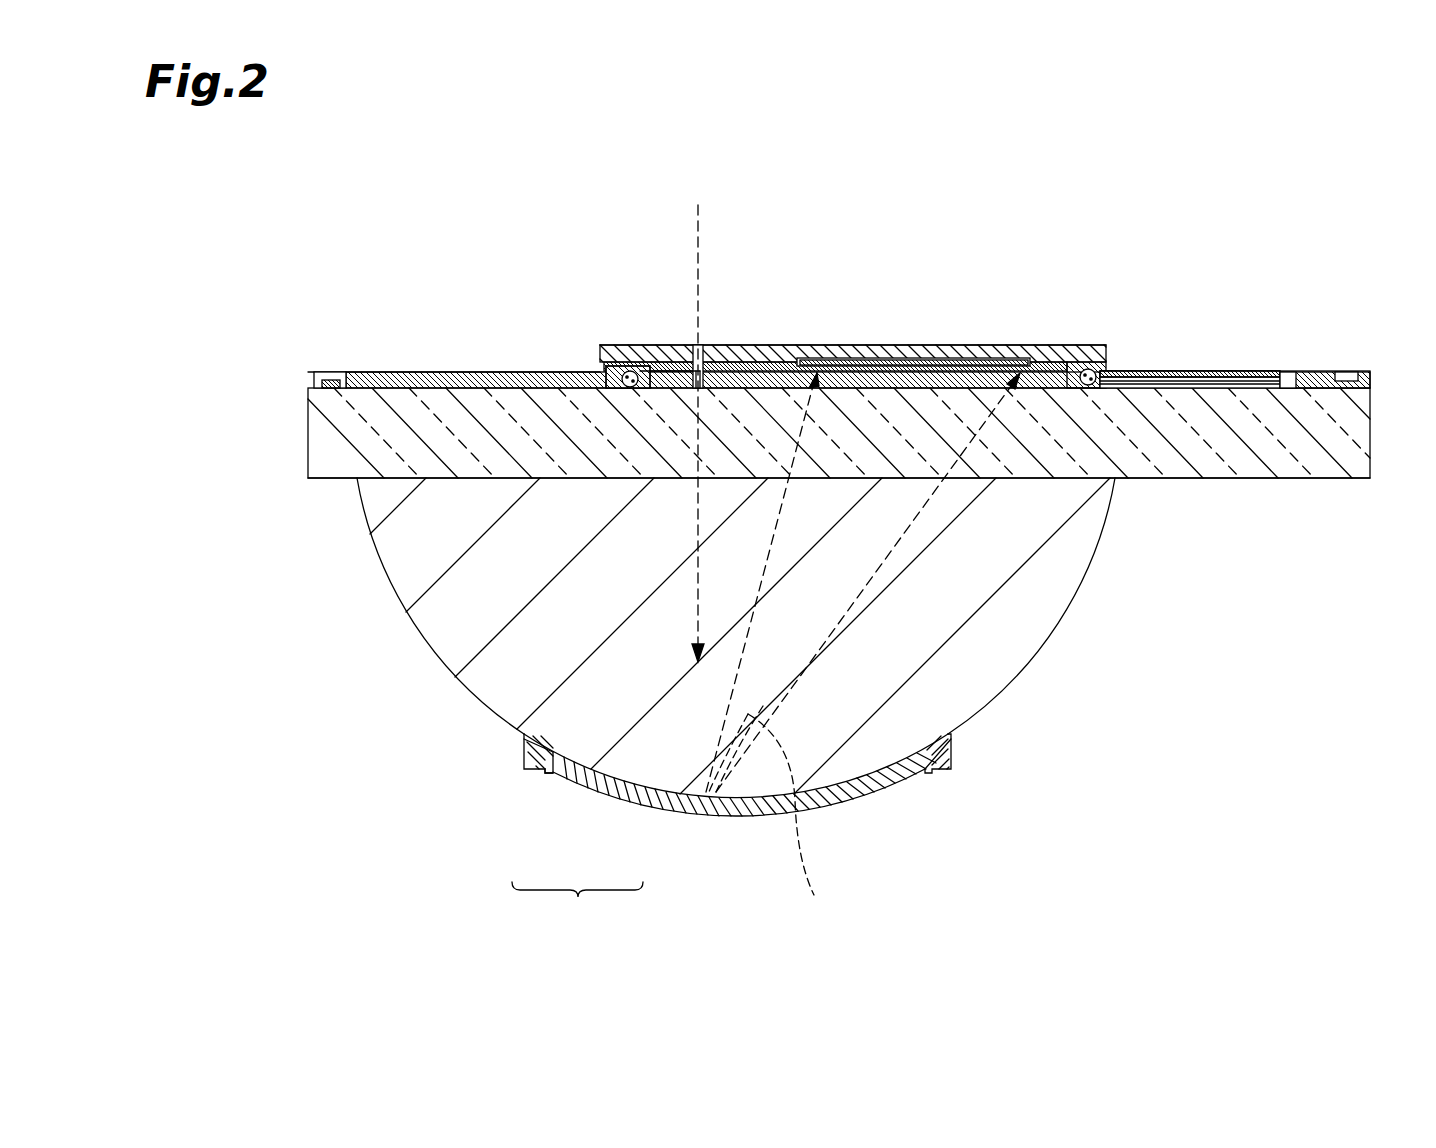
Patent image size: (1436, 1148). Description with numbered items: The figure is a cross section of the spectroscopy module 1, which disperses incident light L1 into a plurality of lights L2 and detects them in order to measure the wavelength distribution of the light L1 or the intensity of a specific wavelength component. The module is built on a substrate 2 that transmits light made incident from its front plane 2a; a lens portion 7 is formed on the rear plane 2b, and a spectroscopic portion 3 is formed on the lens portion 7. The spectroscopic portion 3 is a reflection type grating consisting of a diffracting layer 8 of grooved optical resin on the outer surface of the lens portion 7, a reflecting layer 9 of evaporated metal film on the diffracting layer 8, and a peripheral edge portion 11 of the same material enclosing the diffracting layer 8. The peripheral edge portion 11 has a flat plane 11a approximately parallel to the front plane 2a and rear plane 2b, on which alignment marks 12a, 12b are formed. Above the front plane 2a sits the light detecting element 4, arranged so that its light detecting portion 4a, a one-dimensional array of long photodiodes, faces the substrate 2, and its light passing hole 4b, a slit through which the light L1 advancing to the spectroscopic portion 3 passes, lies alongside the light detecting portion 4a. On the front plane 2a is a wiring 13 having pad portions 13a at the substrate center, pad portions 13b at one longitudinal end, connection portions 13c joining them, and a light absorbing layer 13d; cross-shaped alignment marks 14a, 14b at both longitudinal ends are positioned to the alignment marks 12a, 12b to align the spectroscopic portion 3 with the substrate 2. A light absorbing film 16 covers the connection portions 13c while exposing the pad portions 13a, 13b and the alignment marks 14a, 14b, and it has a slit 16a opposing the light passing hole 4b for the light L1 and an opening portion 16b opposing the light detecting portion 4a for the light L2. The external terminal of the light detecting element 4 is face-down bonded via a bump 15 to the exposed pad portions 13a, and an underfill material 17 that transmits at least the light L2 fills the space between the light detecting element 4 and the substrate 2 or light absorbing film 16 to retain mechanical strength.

The spectroscopy module 1 is at (392, 216).
The substrate 2 is at (318, 432).
The front plane 2a is at (487, 372).
The rear plane 2b is at (1330, 478).
The spectroscopic portion 3 is at (577, 903).
The light detecting element 4 is at (975, 347).
The light detecting portion 4a is at (920, 345).
The light passing hole 4b is at (695, 347).
The lens portion 7 is at (440, 612).
The diffracting layer 8 is at (628, 785).
The reflecting layer 9 is at (652, 808).
The peripheral edge portion 11 is at (527, 765).
The flat plane 11a is at (542, 771).
The alignment mark 12a is at (925, 772).
The alignment mark 12b is at (550, 769).
The wiring 13 is at (1245, 373).
The pad portion 13a is at (622, 372).
The pad portion 13b is at (1290, 376).
The connection portion 13c is at (1210, 376).
The light absorbing layer 13d is at (650, 374).
The alignment mark 14a is at (1348, 374).
The alignment mark 14b is at (335, 374).
The bump 15 is at (612, 378).
The light absorbing film 16 is at (520, 372).
The slit 16a is at (702, 374).
The opening portion 16b is at (770, 360).
The underfill material 17 is at (833, 360).
The light L1 is at (702, 235).
The light L2 is at (800, 885).